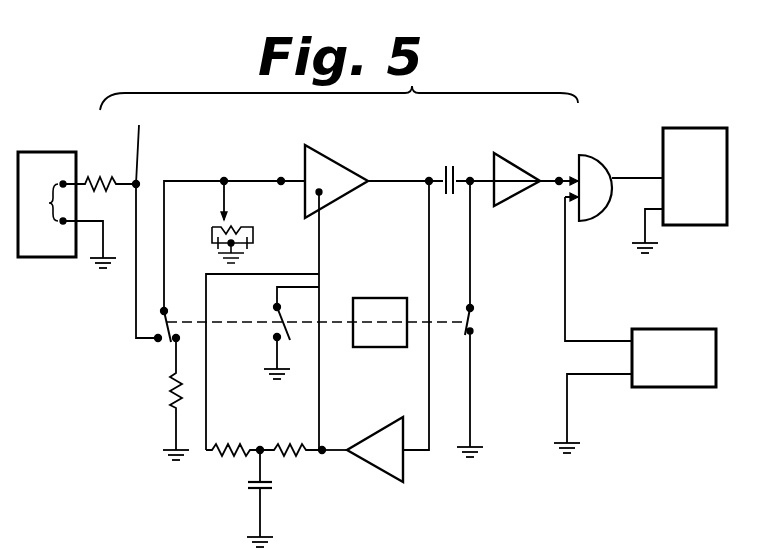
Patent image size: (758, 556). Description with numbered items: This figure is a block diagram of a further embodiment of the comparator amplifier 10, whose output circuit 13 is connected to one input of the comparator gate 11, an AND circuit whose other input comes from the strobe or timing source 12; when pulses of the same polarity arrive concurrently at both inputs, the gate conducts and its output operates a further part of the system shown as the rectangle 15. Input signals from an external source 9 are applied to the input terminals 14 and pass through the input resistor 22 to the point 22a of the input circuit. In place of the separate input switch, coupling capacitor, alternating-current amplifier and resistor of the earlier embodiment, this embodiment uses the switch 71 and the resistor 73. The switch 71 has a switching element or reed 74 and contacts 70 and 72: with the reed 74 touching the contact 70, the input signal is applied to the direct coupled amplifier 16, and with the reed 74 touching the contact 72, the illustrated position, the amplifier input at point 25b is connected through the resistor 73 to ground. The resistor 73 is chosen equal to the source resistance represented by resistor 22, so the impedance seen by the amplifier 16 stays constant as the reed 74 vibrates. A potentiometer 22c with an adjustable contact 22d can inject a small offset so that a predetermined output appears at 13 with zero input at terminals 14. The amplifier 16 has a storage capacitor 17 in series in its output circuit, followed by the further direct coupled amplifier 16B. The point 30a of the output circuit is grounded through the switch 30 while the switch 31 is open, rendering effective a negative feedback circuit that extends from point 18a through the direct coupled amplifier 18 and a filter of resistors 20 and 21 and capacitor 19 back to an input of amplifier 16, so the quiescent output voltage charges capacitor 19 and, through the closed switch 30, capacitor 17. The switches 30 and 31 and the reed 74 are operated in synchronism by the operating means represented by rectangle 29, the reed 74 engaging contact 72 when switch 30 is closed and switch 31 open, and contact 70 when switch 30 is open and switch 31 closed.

The external source 9 is at (52, 251).
The comparator amplifier 10 is at (339, 86).
The comparator gate 11 is at (592, 170).
The strobe or timing source 12 is at (663, 338).
The output circuit 13 is at (561, 160).
The input terminals 14 is at (46, 202).
The further part of the system 15 is at (683, 140).
The direct coupled amplifier 16 is at (336, 163).
The further amplifier 16B is at (515, 184).
The capacitor 17 is at (447, 160).
The direct coupled amplifier 18 is at (398, 472).
The point of the output circuit 18a is at (427, 176).
The capacitor 19 is at (272, 489).
The resistor 20 is at (283, 457).
The resistor 21 is at (230, 456).
The input resistor 22 is at (98, 178).
The point of the input circuit 22a is at (145, 218).
The potentiometer 22c is at (210, 239).
The adjustable contact 22d is at (237, 222).
The input point of amplifier 16 25b is at (281, 181).
The operating means 29 is at (388, 305).
The circuit controller or switch 30 is at (474, 315).
The point of the output circuit 30a is at (473, 173).
The circuit controller or switch 31 is at (272, 332).
The contact 70 is at (156, 341).
The switch 71 is at (195, 302).
The contact 72 is at (178, 340).
The resistor 73 is at (172, 378).
The switching element 74 is at (166, 324).